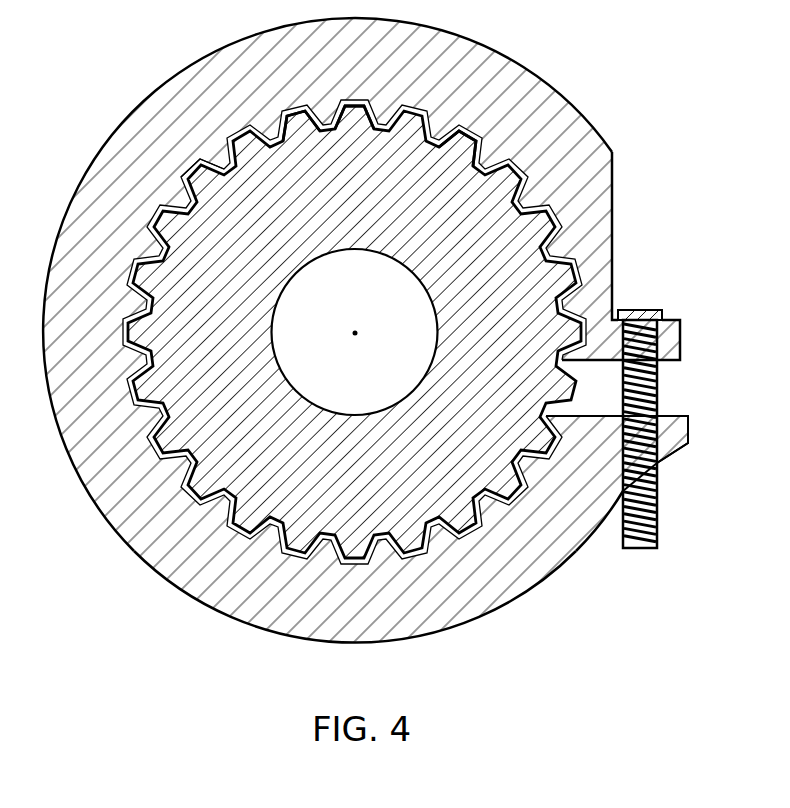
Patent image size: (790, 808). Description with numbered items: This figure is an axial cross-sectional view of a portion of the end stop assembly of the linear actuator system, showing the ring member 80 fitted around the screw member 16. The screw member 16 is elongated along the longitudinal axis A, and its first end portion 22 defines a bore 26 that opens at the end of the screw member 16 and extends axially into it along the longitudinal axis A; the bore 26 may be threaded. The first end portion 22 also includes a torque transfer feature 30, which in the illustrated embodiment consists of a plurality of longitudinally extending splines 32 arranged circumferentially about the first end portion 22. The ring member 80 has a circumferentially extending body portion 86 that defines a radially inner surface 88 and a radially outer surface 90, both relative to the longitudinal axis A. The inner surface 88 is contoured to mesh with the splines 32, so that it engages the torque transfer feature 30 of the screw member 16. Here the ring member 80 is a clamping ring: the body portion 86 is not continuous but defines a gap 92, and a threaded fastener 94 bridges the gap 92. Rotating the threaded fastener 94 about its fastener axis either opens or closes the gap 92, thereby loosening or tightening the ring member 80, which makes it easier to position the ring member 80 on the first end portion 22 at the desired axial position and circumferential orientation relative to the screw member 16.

The screw member 16 is at (148, 293).
The first end portion 22 is at (192, 213).
The bore 26 is at (357, 249).
The torque transfer feature 30 is at (466, 138).
The splines 32 is at (293, 106).
The ring member 80 is at (604, 145).
The circumferentially extending body portion 86 is at (407, 628).
The inner surface 88 is at (146, 378).
The outer surface 90 is at (73, 471).
The gap 92 is at (678, 374).
The threaded fastener 94 is at (657, 405).
The longitudinal axis A is at (358, 334).